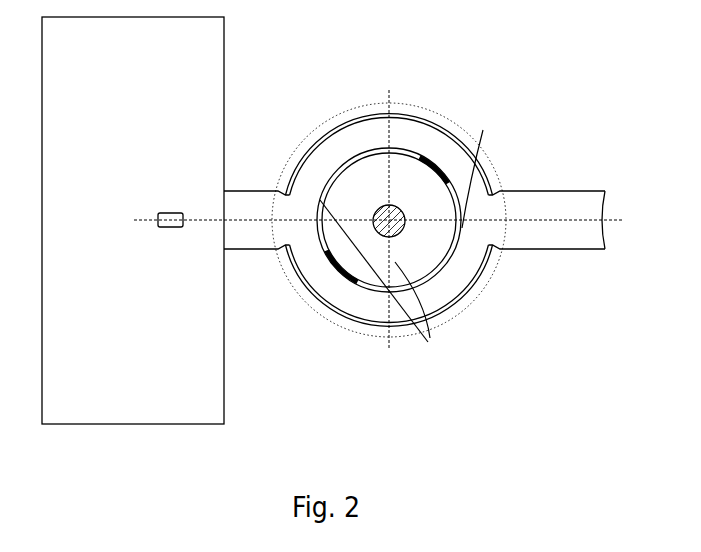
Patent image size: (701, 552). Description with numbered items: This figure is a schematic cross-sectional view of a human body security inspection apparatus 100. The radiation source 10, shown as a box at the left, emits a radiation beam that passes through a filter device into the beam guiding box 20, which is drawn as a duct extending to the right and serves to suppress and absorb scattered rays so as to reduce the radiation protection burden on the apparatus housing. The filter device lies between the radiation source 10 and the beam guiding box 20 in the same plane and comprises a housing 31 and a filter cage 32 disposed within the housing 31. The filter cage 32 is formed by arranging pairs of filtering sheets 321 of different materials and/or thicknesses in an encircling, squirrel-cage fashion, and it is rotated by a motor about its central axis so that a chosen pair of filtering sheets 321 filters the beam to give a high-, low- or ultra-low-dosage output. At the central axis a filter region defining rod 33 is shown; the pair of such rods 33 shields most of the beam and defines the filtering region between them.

The human body security inspection apparatus 100 is at (306, 460).
The radiation source 10 is at (167, 227).
The beam guiding box 20 is at (572, 237).
The housing 31 is at (351, 320).
The filter cage 32 is at (332, 282).
The filtering sheets 321 is at (378, 150).
The filter region defining rods 33 is at (407, 243).